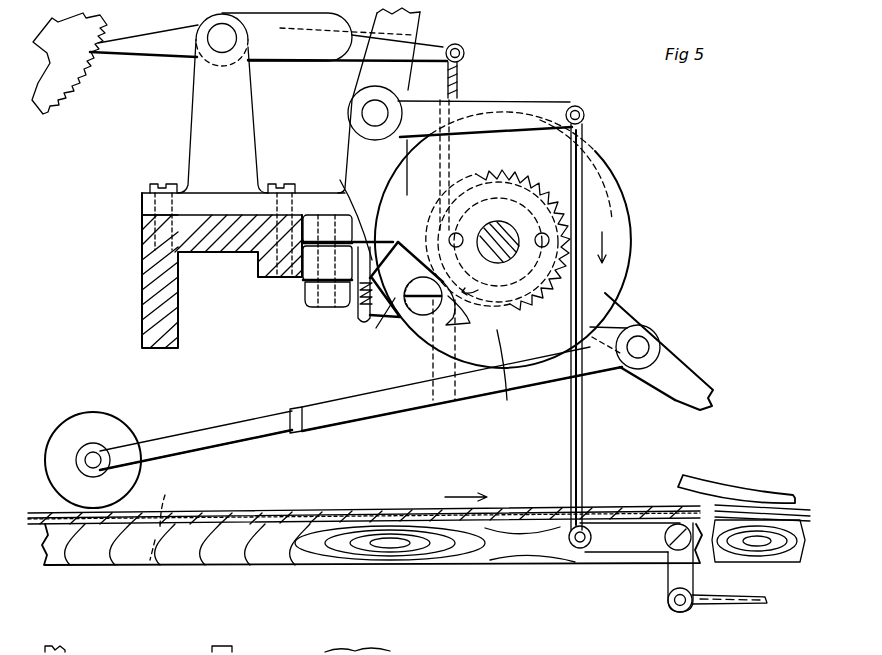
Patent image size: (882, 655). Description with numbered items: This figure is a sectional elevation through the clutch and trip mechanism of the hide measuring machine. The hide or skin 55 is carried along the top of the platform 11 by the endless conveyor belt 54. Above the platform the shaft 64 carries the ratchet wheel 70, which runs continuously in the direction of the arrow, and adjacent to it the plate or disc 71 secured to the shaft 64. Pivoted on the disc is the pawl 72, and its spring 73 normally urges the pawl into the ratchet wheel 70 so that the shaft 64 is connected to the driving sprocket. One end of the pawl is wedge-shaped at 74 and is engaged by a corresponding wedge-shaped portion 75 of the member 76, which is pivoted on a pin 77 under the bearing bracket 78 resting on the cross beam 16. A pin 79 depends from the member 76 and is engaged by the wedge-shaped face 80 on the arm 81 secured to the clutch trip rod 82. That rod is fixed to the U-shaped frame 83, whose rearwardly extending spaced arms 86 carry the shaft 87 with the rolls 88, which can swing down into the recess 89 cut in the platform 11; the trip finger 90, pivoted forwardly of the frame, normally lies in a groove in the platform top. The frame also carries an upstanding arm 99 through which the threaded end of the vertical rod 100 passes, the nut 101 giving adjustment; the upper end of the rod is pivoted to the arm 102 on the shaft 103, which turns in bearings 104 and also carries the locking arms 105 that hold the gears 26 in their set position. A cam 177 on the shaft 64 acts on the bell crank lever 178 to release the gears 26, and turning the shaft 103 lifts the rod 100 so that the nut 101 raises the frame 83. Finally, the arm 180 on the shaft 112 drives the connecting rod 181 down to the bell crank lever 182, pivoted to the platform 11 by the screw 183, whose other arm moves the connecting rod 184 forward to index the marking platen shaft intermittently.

The platform 11 is at (490, 565).
The cross beam 16 is at (145, 252).
The gear 26 is at (70, 84).
The endless conveyor belt 54 is at (345, 515).
The hide or skin 55 is at (205, 513).
The shaft 64 is at (490, 222).
The ratchet wheel 70 is at (560, 232).
The plate or disc 71 is at (632, 246).
The pawl 72 is at (412, 315).
The spring 73 is at (507, 380).
The wedge-shaped portion 74 is at (388, 242).
The wedge-shaped portion 75 is at (355, 215).
The member 76 is at (300, 280).
The pin 77 is at (304, 305).
The bearing bracket 78 is at (243, 206).
The pin 79 is at (358, 318).
The wedge-shaped face 80 is at (370, 318).
The arm 81 is at (388, 322).
The clutch trip rod 82 is at (650, 338).
The U-shaped frame 83 is at (352, 428).
The spaced arms 86 is at (236, 430).
The shaft 87 is at (102, 455).
The rolls 88 is at (80, 418).
The recess 89 is at (169, 516).
The trip finger 90 is at (690, 378).
The arm 99 is at (432, 400).
The vertical rod 100 is at (462, 88).
The nut 101 is at (457, 400).
The arm 102 is at (450, 38).
The shaft 103 is at (213, 46).
The bearings 104 is at (189, 138).
The locking arm 105 is at (130, 37).
The shaft 112 is at (362, 113).
The cam 177 is at (603, 150).
The bell crank lever 178 is at (362, 68).
The arm 180 is at (540, 103).
The connecting rod 181 is at (584, 436).
The bell crank lever 182 is at (612, 560).
The screw 183 is at (668, 560).
The connecting rod 184 is at (748, 605).